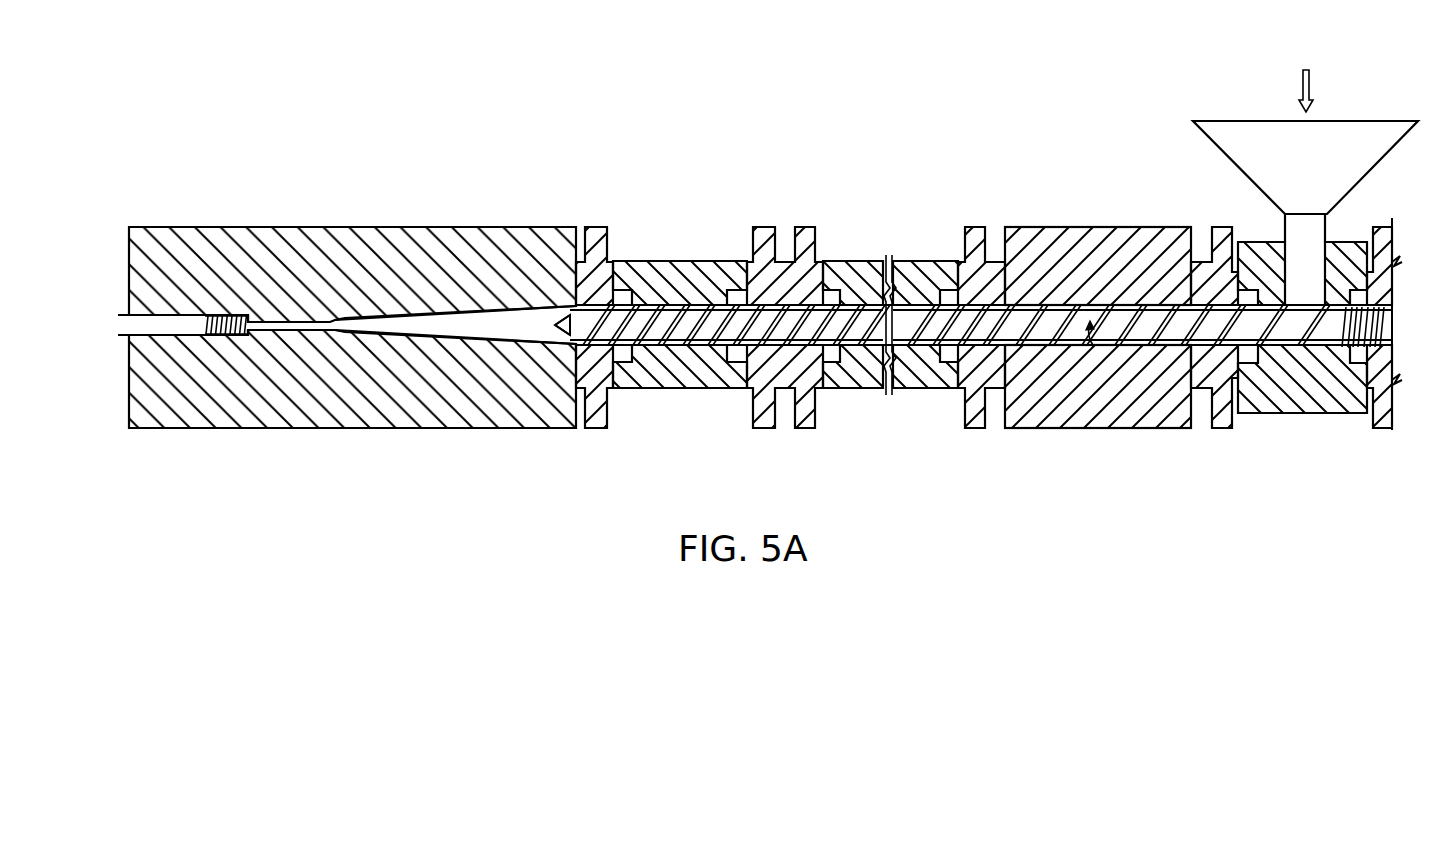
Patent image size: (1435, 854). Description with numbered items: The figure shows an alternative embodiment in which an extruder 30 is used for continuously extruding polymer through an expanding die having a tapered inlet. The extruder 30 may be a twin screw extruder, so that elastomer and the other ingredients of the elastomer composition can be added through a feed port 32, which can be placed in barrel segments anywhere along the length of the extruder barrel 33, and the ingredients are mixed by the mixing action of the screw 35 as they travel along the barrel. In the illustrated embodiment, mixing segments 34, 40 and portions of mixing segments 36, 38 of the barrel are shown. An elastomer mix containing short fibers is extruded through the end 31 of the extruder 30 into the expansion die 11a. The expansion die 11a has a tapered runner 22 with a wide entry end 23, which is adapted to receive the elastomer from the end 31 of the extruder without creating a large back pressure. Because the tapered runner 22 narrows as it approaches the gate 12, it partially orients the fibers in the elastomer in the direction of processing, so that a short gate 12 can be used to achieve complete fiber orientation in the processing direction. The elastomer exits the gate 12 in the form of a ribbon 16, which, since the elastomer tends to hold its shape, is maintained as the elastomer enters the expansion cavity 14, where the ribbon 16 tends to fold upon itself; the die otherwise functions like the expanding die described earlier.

The expansion die 11a is at (203, 226).
The gate 12 is at (300, 340).
The expansion cavity 14 is at (192, 340).
The ribbon 16 is at (232, 340).
The tapered runner 22 is at (458, 340).
The wide entry end 23 is at (575, 348).
The extruder 30 is at (932, 118).
The end of the extruder 31 is at (557, 325).
The feed port 32 is at (1314, 133).
The extruder barrel 33 is at (1066, 345).
The mixing segment 34 is at (1102, 243).
The screw 35 is at (697, 345).
The mixing segment 36 is at (918, 262).
The mixing segment 38 is at (853, 262).
The mixing segment 40 is at (697, 263).